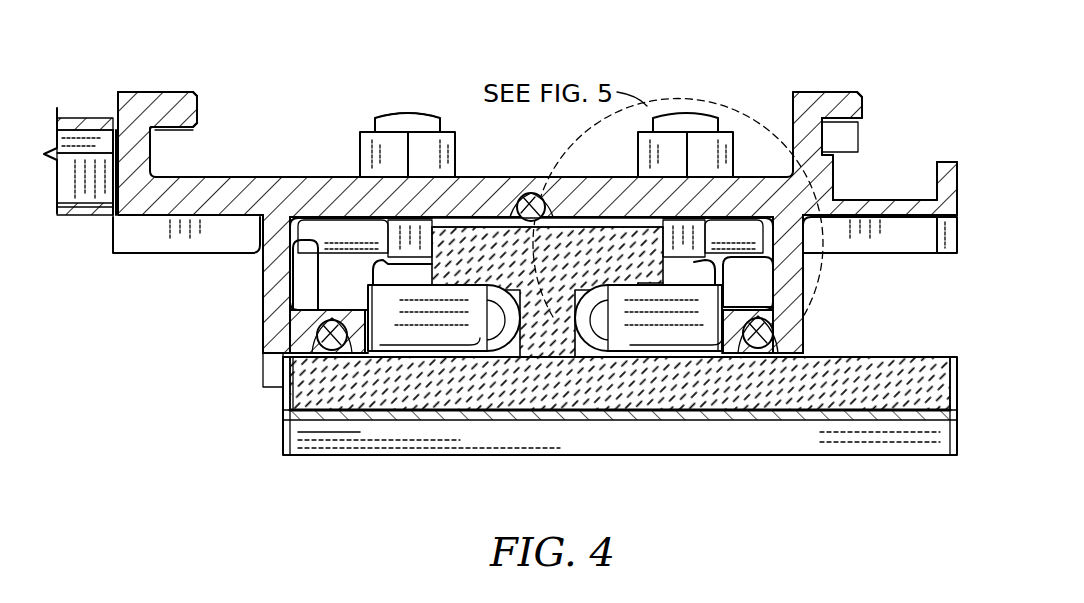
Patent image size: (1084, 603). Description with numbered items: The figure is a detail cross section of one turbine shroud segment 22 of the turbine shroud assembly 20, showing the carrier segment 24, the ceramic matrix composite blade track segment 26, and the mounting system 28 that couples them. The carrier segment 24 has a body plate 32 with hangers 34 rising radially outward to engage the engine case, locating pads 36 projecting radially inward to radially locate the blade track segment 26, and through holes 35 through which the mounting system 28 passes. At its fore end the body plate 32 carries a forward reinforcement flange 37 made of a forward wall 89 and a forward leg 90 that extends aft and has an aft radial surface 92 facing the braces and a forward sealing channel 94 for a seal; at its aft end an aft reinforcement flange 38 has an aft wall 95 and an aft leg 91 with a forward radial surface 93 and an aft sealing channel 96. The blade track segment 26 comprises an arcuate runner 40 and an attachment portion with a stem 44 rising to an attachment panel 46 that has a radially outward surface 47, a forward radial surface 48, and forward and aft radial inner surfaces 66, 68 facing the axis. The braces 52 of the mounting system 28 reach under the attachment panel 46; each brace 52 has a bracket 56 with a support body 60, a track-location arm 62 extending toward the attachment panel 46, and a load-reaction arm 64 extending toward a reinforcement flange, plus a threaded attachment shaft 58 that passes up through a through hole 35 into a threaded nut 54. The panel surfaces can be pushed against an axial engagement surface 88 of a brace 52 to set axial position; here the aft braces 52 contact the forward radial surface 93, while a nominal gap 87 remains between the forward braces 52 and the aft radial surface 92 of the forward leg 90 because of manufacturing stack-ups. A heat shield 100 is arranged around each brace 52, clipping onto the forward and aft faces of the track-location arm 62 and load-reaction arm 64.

The turbine shroud assembly 20 is at (723, 48).
The turbine shroud segment 22 is at (767, 72).
The carrier segment 24 is at (243, 178).
The blade track segment 26 is at (322, 432).
The mounting system 28 is at (402, 102).
The body plate 32 is at (490, 187).
The hangers 34 is at (153, 100).
The through holes 35 is at (340, 226).
The locating pads 36 is at (560, 205).
The forward reinforcement flange 37 is at (262, 342).
The aft reinforcement flange 38 is at (805, 328).
The runner 40 is at (432, 315).
The stem 44 is at (542, 352).
The attachment panel 46 is at (492, 240).
The radially outward surface 47 is at (598, 224).
The forward radial surface 48 is at (392, 245).
The braces 52 is at (447, 352).
The threaded nut 54 is at (445, 122).
The bracket 56 is at (376, 350).
The threaded attachment shaft 58 is at (677, 110).
The support body 60 is at (705, 352).
The track-location arm 62 is at (616, 357).
The load-reaction arm 64 is at (722, 352).
The forward radial inner surface 66 is at (456, 292).
The aft radial inner surface 68 is at (720, 296).
The gap 87 is at (355, 295).
The axial engagement surface 88 is at (432, 287).
The forward wall 89 is at (267, 275).
The forward leg 90 is at (301, 298).
The aft leg 91 is at (786, 292).
The aft radial surface 92 is at (288, 404).
The forward radial surface 93 is at (748, 352).
The forward sealing channel 94 is at (318, 340).
The aft wall 95 is at (796, 270).
The aft sealing channel 96 is at (776, 344).
The heat shield 100 is at (796, 225).